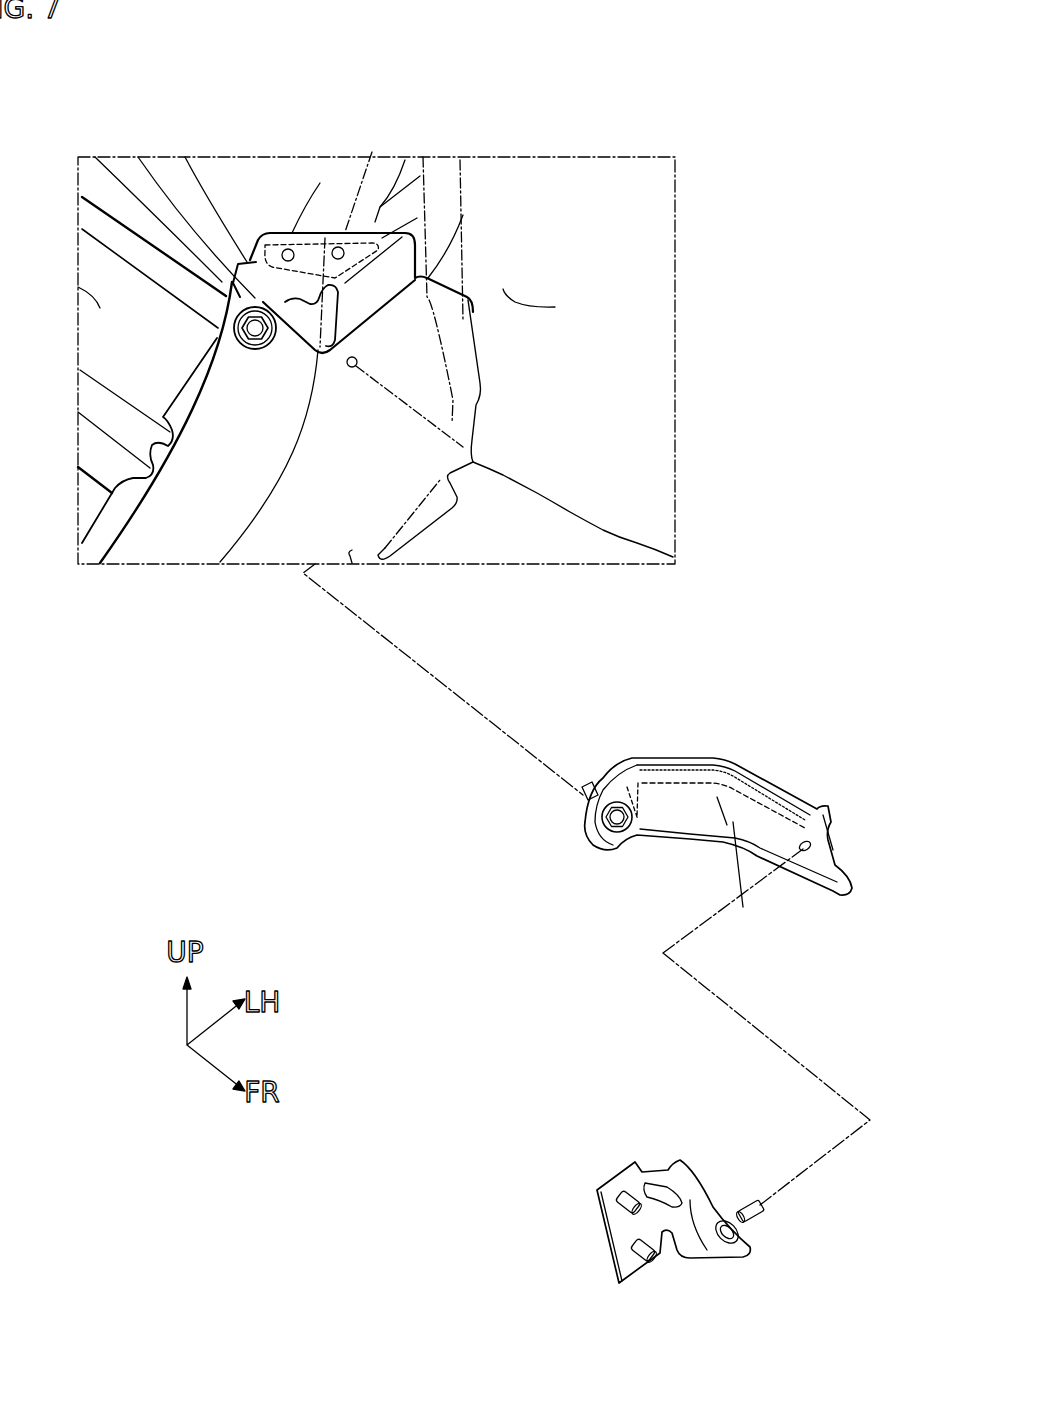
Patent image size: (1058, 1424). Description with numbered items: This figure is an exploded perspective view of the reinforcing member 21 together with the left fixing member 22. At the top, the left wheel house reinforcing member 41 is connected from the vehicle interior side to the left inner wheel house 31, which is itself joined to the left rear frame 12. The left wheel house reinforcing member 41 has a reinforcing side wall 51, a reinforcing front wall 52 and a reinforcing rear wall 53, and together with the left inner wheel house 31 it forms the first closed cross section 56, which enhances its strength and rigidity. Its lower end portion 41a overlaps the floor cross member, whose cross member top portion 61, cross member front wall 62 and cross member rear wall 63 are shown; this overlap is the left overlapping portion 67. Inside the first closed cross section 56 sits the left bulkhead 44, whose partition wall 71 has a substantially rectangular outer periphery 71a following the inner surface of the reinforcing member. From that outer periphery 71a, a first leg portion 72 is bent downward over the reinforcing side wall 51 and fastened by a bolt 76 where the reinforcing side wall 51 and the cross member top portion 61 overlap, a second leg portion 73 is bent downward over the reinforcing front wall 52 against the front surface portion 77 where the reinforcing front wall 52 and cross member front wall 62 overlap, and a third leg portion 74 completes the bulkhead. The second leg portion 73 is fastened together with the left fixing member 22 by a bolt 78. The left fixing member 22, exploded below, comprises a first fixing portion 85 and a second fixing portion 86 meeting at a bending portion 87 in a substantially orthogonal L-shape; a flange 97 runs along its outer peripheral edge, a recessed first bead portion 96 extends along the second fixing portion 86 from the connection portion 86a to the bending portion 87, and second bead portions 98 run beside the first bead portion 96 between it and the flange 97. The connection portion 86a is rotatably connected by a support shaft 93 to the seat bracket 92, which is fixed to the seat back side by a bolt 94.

The reinforcing member 21 is at (823, 131).
The left rear frame 12 is at (78, 287).
The first leg portion 72 is at (95, 157).
The third leg portion 74 is at (138, 157).
The lower end portion 41a is at (245, 253).
The reinforcing rear wall 53 is at (247, 262).
The left wheel house reinforcing member 41 is at (259, 191).
The left bulkhead 44 is at (305, 230).
The reinforcing side wall 51 is at (307, 185).
The first closed cross section 56 is at (320, 183).
The partition wall 71 is at (325, 236).
The outer periphery 71a is at (405, 160).
The reinforcing front wall 52 is at (432, 297).
The second leg portion 73 is at (463, 215).
The left inner wheel house 31 is at (555, 307).
The front surface portion 77 is at (373, 345).
The cross member front wall 62 is at (340, 428).
The left overlapping portion 67 is at (240, 328).
The bolt 76 is at (240, 322).
The cross member rear wall 63 is at (205, 362).
The cross member top portion 61 is at (185, 388).
The left fixing member 22 is at (803, 796).
The second fixing portion 86 is at (753, 771).
The connection portion 86a is at (812, 820).
The flange 97 is at (723, 767).
The second bead portion 98 is at (677, 772).
The bending portion 87 is at (637, 795).
The first bead portion 96 is at (743, 907).
The bolt 78 is at (627, 828).
The first fixing portion 85 is at (613, 770).
The seat bracket 92 is at (620, 1263).
The support shaft 93 is at (727, 1240).
The bolt 94 is at (623, 1207).